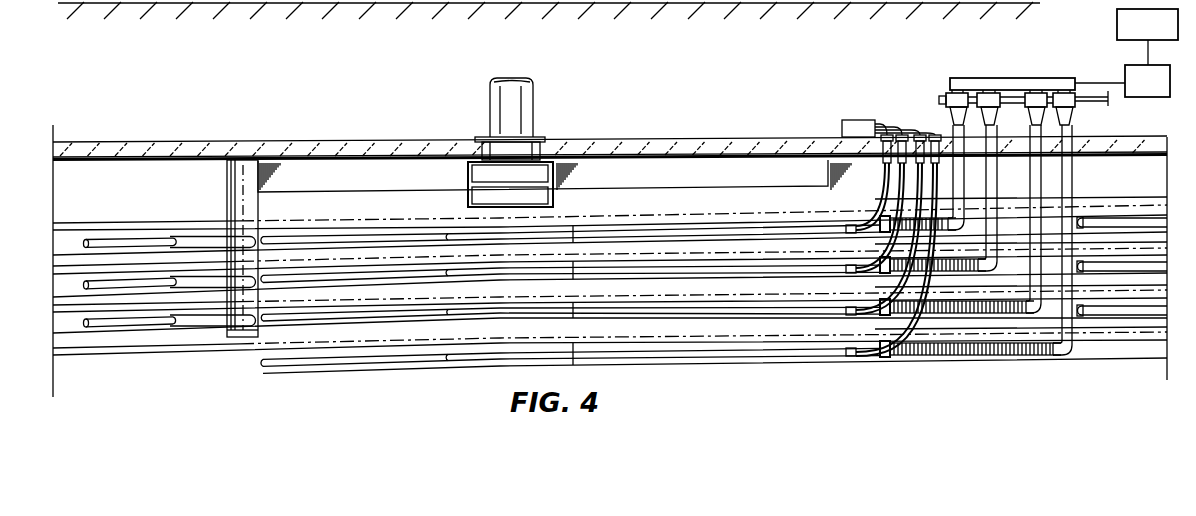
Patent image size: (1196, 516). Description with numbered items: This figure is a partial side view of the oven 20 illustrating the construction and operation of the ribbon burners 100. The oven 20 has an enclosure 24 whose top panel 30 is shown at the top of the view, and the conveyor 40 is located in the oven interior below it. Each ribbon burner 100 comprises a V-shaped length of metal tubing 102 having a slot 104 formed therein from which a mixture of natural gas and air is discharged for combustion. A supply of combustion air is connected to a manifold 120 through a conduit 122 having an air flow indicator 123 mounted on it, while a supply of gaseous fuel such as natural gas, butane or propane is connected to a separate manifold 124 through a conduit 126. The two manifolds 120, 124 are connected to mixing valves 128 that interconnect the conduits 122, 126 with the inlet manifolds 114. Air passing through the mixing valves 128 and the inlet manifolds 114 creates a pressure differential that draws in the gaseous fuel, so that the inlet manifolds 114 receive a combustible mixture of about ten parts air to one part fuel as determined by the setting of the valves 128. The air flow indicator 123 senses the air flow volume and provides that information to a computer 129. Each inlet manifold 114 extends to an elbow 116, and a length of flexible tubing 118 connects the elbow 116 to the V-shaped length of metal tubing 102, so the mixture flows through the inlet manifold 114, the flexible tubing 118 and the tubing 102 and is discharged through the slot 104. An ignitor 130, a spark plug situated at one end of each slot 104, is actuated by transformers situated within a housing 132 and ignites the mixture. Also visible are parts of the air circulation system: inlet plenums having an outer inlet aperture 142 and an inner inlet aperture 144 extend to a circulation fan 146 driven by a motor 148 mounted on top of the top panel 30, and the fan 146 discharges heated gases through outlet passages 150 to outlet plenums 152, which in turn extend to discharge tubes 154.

The oven 20 is at (266, 118).
The enclosure 24 is at (101, 141).
The top panel 30 is at (232, 150).
The conveyor 40 is at (122, 223).
The ribbon burner 100 is at (393, 330).
The V-shaped length of metal tubing 102 is at (289, 275).
The slot 104 is at (398, 252).
The inlet manifold 114 is at (1050, 170).
The elbow 116 is at (1075, 338).
The flexible tubing 118 is at (947, 320).
The manifold 120 is at (969, 78).
The conduit 122 is at (1090, 78).
The air flow indicator 123 is at (1162, 91).
The manifold 124 is at (1012, 98).
The conduit 126 is at (1110, 100).
The mixing valve 128 is at (956, 122).
The computer 129 is at (1162, 34).
The ignitor 130 is at (850, 222).
The housing 132 is at (842, 124).
The outer inlet aperture 142 is at (478, 175).
The inner inlet aperture 144 is at (478, 197).
The circulation fan 146 is at (520, 150).
The motor 148 is at (532, 97).
The outlet passage 150 is at (320, 177).
The outlet plenum 152 is at (228, 192).
The discharge tube 154 is at (173, 291).